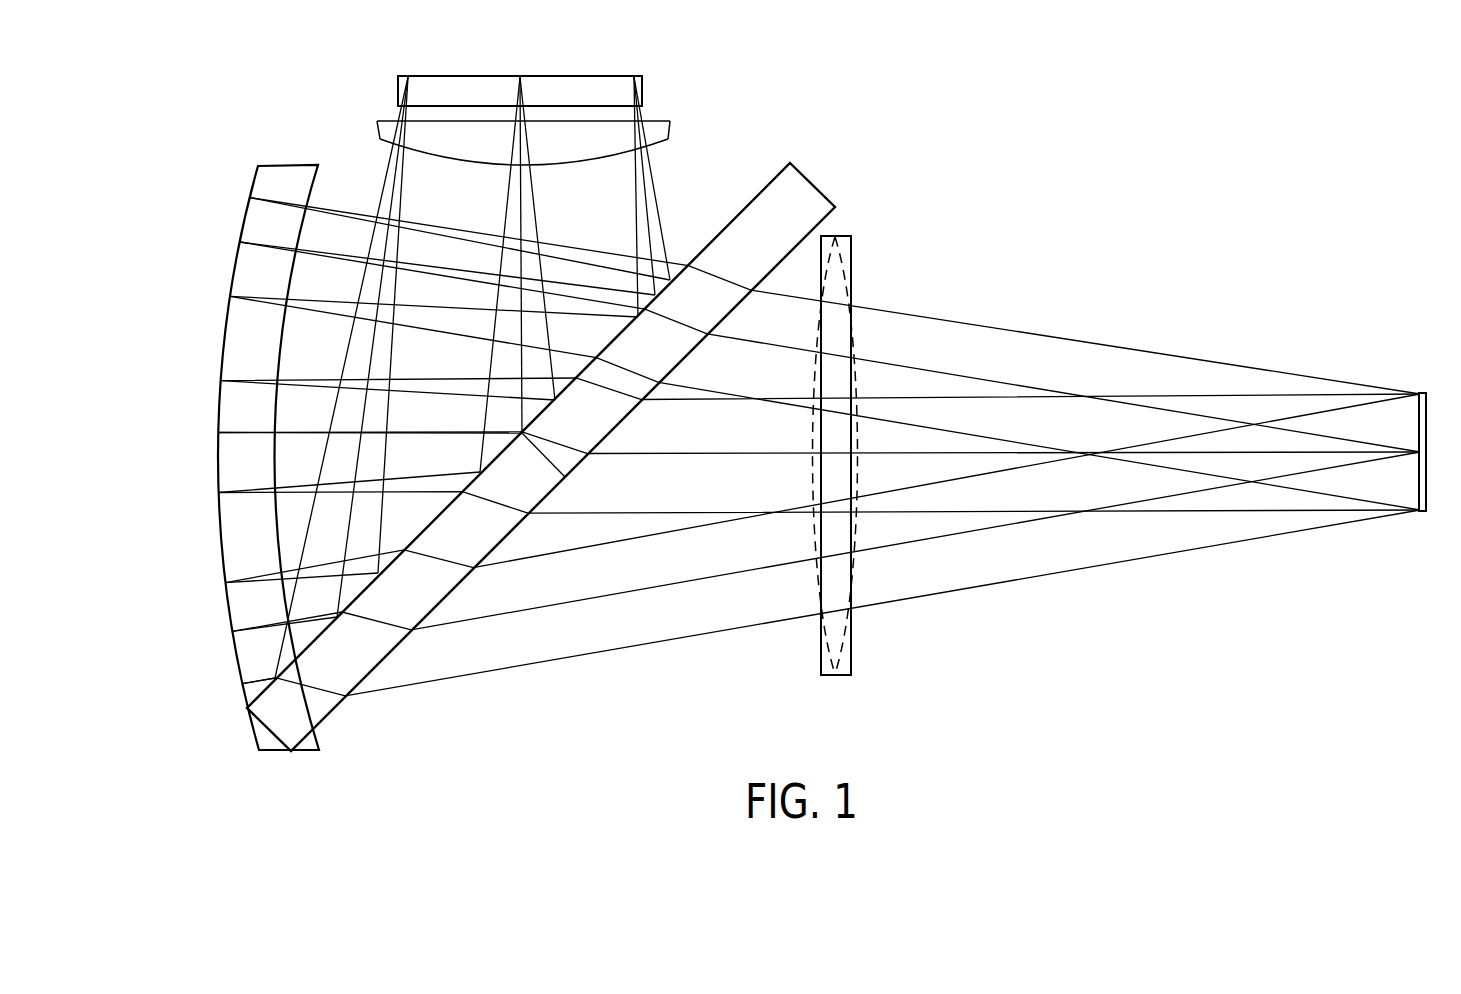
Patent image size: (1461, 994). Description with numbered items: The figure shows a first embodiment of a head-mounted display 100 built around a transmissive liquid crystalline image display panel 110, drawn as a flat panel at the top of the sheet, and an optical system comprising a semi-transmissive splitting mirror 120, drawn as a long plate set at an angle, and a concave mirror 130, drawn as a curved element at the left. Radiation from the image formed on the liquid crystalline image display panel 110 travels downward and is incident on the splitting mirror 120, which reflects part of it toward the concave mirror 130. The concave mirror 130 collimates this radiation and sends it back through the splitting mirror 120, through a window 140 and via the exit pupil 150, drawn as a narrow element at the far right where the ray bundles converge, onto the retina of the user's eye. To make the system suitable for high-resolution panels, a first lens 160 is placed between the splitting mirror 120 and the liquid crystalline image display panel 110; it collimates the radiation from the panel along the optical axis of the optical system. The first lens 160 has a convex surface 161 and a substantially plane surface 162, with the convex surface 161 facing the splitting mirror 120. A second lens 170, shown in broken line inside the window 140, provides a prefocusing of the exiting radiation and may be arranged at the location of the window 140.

The head-mounted display 100 is at (212, 731).
The transmissive liquid crystalline image display panel 110 is at (645, 84).
The splitting mirror 120 is at (810, 178).
The concave mirror 130 is at (245, 218).
The window 140 is at (866, 469).
The exit pupil 150 is at (1430, 482).
The first lens 160 is at (527, 111).
The convex surface 161 is at (386, 120).
The substantially plane surface 162 is at (382, 149).
The second lens 170 is at (852, 648).